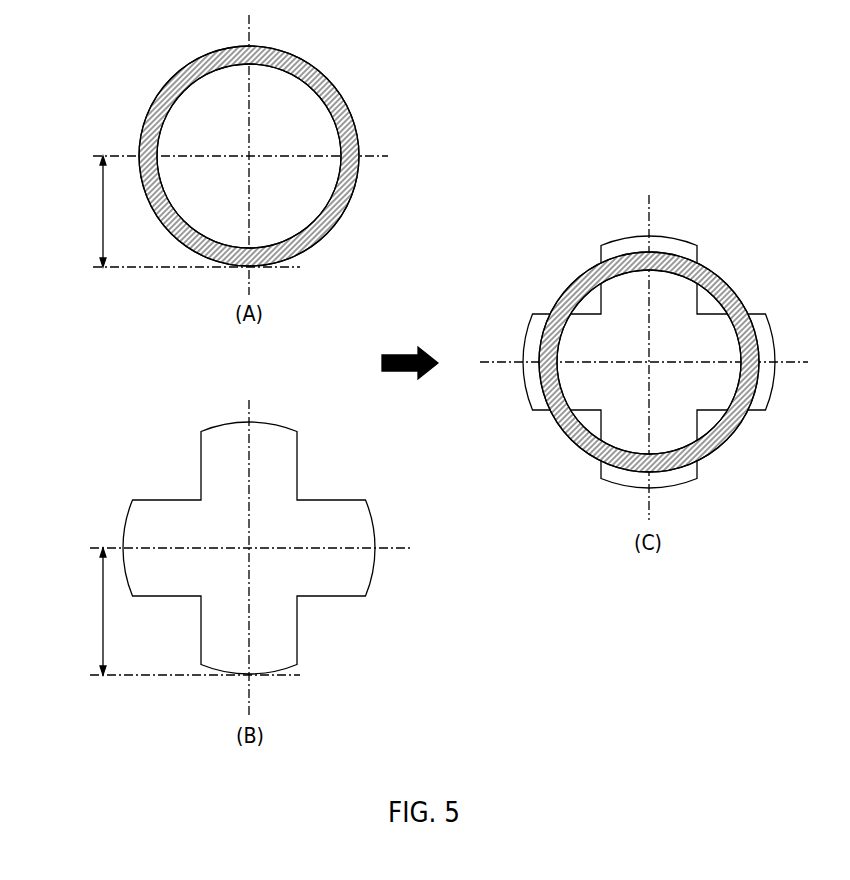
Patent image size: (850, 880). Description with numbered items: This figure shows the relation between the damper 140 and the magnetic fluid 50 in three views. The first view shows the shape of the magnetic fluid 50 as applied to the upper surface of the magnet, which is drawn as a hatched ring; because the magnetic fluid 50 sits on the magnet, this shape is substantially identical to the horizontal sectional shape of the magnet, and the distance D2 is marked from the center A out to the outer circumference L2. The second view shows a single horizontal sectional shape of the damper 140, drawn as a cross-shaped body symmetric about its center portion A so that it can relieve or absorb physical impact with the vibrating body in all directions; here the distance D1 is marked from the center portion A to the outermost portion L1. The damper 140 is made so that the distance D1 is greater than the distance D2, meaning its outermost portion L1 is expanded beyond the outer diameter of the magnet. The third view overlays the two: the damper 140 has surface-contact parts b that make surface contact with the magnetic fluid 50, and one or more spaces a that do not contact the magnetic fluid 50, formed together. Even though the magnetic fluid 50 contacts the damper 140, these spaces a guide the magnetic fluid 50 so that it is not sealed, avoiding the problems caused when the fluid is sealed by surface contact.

The magnetic fluid 50 is at (543, 327).
The damper 140 is at (538, 402).
The center portion A is at (249, 156).
The outermost portion L1 is at (252, 675).
The outer circumference L2 is at (252, 267).
The distance from the center portion to the outermost portion D1 is at (116, 611).
The distance from the center to the outer circumference D2 is at (116, 211).
The space a is at (648, 360).
The surface-contact part b is at (647, 361).